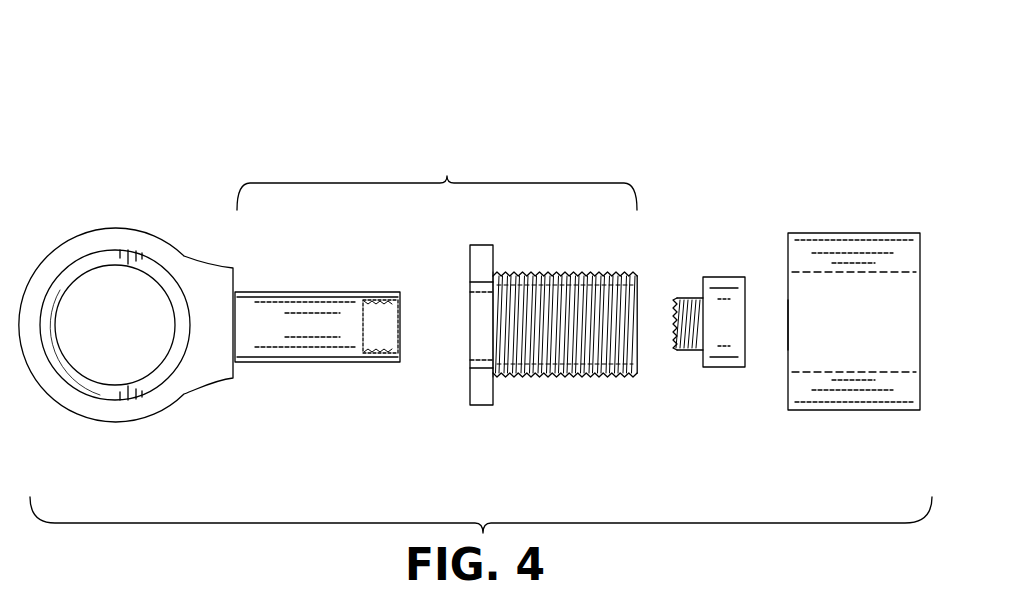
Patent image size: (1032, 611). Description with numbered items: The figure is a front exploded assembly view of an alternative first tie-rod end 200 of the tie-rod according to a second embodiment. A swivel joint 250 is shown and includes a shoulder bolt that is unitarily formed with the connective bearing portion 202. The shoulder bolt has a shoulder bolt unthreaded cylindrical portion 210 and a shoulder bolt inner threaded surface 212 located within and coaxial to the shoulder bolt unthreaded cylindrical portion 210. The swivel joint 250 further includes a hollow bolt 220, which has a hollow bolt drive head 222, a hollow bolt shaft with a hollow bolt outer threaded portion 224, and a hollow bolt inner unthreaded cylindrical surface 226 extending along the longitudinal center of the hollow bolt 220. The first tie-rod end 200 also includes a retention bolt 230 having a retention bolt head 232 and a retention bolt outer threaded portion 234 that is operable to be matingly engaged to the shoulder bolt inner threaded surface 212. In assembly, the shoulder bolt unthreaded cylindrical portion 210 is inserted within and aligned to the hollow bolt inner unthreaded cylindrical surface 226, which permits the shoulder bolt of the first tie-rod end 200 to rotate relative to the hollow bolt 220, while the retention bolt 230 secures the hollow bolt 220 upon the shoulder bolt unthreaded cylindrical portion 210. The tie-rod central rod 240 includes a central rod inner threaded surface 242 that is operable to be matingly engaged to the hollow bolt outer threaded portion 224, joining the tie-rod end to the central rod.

The first tie-rod end 200 is at (170, 168).
The connective bearing portion 202 is at (88, 250).
The shoulder bolt unthreaded cylindrical portion 210 is at (290, 362).
The shoulder bolt inner threaded surface 212 is at (405, 329).
The hollow bolt 220 is at (565, 373).
The hollow bolt drive head 222 is at (481, 398).
The hollow bolt outer threaded portion 224 is at (541, 372).
The hollow bolt inner unthreaded cylindrical surface 226 is at (464, 312).
The retention bolt 230 is at (716, 324).
The retention bolt head 232 is at (722, 352).
The retention bolt outer threaded portion 234 is at (692, 350).
The tie-rod central rod 240 is at (856, 233).
The central rod inner threaded surface 242 is at (782, 349).
The swivel joint 250 is at (437, 178).